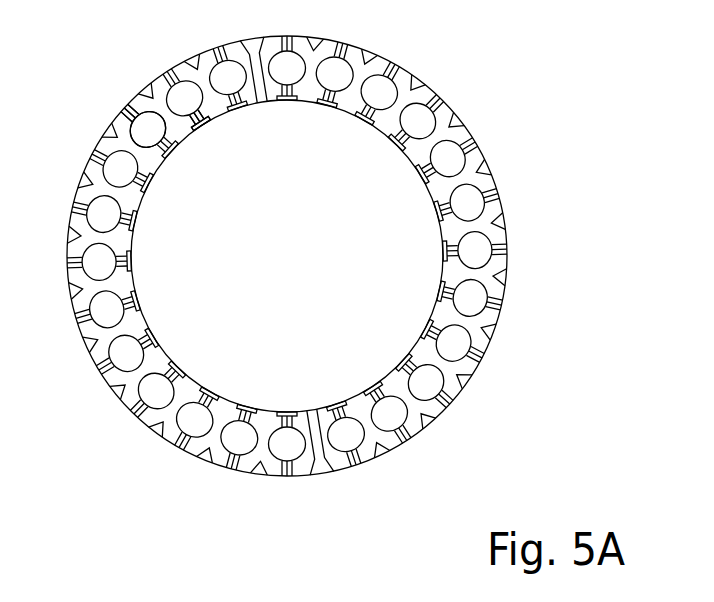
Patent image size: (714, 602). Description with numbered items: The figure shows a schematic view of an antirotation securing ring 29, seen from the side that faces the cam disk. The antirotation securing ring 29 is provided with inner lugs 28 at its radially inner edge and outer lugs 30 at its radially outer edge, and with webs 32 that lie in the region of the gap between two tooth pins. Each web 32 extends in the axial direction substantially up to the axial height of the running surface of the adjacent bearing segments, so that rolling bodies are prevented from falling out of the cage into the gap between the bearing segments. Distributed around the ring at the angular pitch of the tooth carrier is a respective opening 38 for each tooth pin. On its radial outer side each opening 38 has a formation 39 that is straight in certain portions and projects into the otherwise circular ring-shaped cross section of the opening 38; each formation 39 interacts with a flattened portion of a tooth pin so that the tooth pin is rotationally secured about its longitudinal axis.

The inner lug 28 is at (203, 121).
The antirotation securing ring 29 is at (495, 185).
The outer lug 30 is at (145, 88).
The web 32 is at (262, 103).
The opening 38 is at (147, 146).
The formation 39 is at (129, 113).